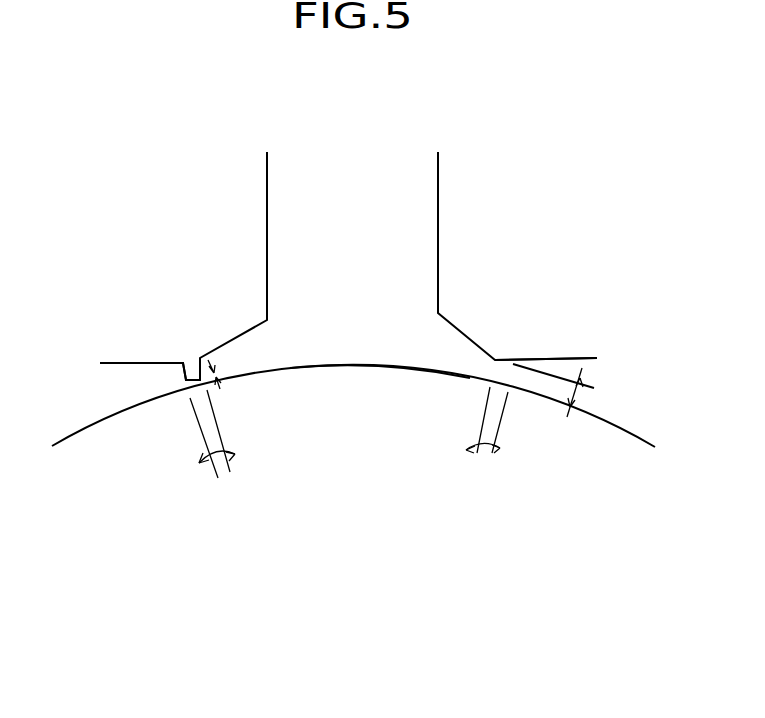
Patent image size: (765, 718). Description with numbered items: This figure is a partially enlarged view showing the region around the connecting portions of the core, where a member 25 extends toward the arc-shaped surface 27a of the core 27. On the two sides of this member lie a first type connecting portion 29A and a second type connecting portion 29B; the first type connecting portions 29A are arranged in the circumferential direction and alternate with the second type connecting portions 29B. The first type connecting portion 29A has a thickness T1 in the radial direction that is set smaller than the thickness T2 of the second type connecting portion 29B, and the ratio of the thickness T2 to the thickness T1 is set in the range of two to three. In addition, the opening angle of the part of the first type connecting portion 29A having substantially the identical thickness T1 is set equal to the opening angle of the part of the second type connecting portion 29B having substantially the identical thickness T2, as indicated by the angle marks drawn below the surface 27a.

The stator tooth 25 is at (290, 253).
The rotor 27 is at (343, 350).
The rotor outer peripheral surface 27a is at (400, 370).
The first type connecting portion 29A is at (180, 354).
The second type connecting portion 29B is at (517, 357).
The thickness of first type connecting portion T1 is at (222, 363).
The thickness of second type connecting portion T2 is at (577, 408).